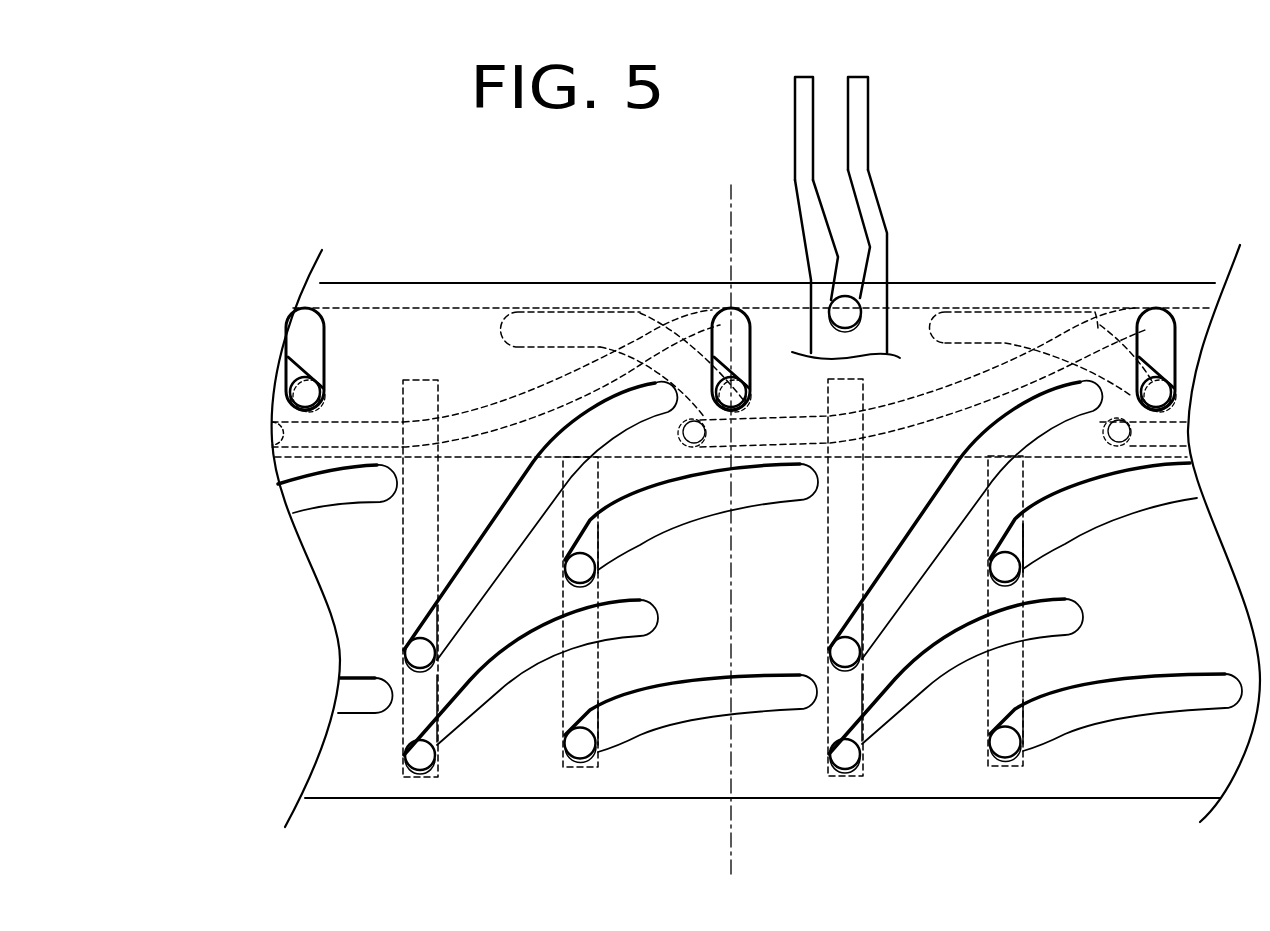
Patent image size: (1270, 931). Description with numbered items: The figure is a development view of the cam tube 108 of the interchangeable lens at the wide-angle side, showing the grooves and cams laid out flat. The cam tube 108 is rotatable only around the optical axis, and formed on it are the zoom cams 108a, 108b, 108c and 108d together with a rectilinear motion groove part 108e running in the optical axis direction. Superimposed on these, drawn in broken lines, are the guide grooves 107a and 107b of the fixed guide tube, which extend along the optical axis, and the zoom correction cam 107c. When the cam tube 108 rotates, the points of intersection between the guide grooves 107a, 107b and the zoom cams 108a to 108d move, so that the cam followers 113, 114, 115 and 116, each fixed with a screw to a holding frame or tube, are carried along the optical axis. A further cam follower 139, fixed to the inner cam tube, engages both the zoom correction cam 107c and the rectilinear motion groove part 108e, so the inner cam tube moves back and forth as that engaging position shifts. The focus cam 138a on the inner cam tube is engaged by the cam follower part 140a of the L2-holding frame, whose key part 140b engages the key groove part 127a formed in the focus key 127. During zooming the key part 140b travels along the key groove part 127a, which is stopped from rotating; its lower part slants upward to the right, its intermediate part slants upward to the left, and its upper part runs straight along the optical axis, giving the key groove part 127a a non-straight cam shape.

The cam tube 108 is at (920, 765).
The zoom cam 108a is at (460, 735).
The zoom cam 108b is at (770, 500).
The zoom cam 108c is at (665, 725).
The zoom cam 108d is at (462, 577).
The rectilinear motion groove part 108e is at (746, 340).
The guide groove 107a is at (410, 723).
The guide groove 107b is at (558, 708).
The zoom correction cam 107c is at (685, 365).
The cam follower 113 is at (412, 768).
The cam follower 114 is at (582, 568).
The cam follower 115 is at (580, 748).
The cam follower 116 is at (420, 652).
The focus key 127 is at (858, 107).
The key groove part 127a is at (860, 146).
The focus cam 138a is at (1005, 365).
The cam follower 139 is at (727, 392).
The cam follower part 140a is at (692, 420).
The key part 140b is at (843, 303).